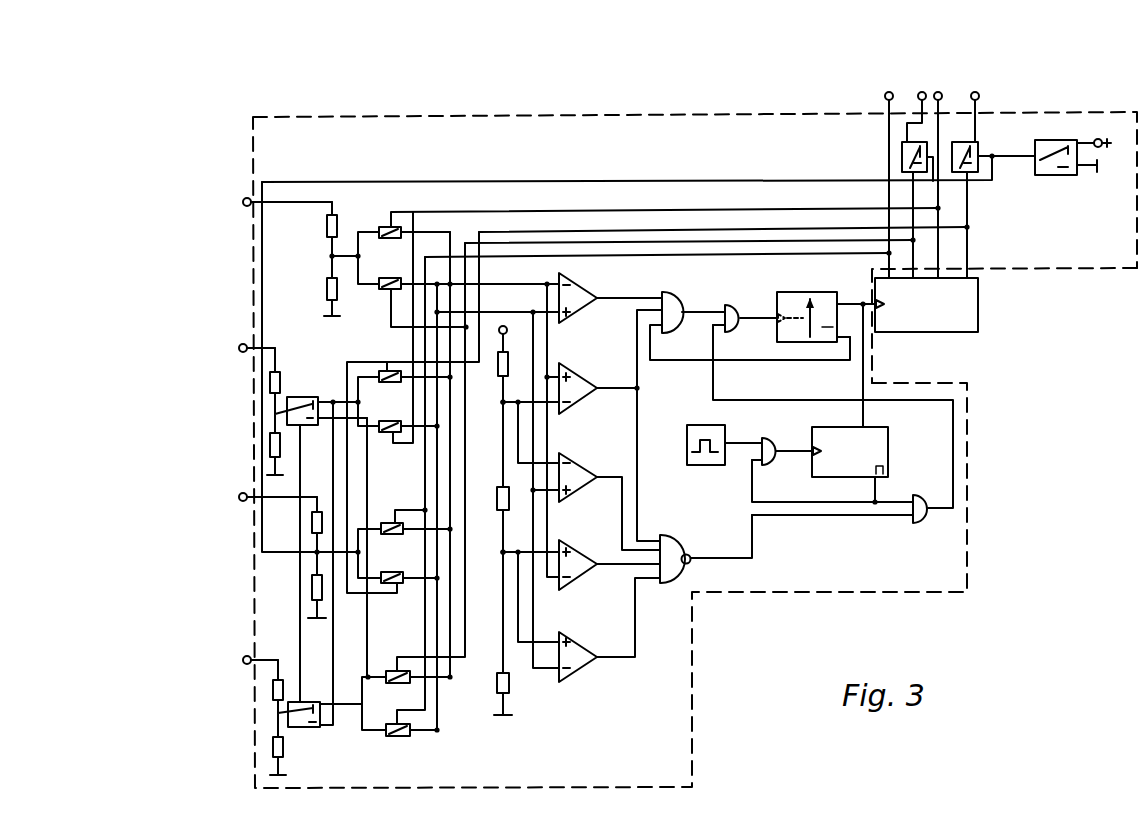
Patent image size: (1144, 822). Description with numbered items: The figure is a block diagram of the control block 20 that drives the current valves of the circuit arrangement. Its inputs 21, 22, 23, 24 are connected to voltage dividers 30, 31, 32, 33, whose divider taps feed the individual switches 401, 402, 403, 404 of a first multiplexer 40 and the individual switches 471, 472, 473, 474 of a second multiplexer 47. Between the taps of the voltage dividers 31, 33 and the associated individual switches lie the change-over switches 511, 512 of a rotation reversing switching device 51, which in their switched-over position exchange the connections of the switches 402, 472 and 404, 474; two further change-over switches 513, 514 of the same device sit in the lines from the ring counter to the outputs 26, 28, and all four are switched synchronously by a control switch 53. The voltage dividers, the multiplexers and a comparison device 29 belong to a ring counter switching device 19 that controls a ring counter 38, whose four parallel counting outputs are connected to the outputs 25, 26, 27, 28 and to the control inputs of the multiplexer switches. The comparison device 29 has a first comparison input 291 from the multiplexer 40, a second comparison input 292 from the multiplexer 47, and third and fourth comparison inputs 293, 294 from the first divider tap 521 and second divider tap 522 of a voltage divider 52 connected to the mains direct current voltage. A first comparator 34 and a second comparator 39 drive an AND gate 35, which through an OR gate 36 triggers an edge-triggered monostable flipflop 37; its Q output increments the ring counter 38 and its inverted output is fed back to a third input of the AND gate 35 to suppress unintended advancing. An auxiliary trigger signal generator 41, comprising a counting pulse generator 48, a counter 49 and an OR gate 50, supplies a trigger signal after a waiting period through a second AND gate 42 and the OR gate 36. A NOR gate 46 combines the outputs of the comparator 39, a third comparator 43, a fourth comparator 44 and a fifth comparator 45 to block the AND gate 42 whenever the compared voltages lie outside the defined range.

The ring counter switching device 19 is at (972, 384).
The control block 20 is at (206, 238).
The input 21 is at (243, 199).
The input 22 is at (240, 345).
The input 23 is at (240, 494).
The input 24 is at (243, 657).
The output 25 is at (887, 102).
The output 26 is at (920, 101).
The output 27 is at (941, 101).
The output 28 is at (980, 103).
The comparison device 29 is at (618, 486).
The first comparison input 291 is at (546, 283).
The second comparison input 292 is at (534, 310).
The third comparison input 293 is at (517, 401).
The fourth comparison input 294 is at (517, 551).
The voltage divider 30 is at (330, 256).
The voltage divider 31 is at (273, 418).
The voltage divider 32 is at (315, 555).
The voltage divider 33 is at (275, 712).
The first comparator 34 is at (575, 290).
The AND gate 35 is at (677, 295).
The OR gate 36 is at (735, 303).
The monostable flipflop 37 is at (801, 295).
The ring counter 38 is at (915, 333).
The second comparator 39 is at (580, 375).
The first multiplexer 40 is at (402, 229).
The individual switch 401 is at (382, 226).
The individual switch 402 is at (388, 371).
The individual switch 403 is at (385, 523).
The individual switch 404 is at (390, 670).
The auxiliary trigger signal generator 41 is at (866, 501).
The AND gate 42 is at (925, 522).
The third comparator 43 is at (577, 566).
The fourth comparator 44 is at (580, 483).
The fifth comparator 45 is at (578, 661).
The NOR gate 46 is at (683, 538).
The second multiplexer 47 is at (394, 268).
The individual switch 471 is at (393, 290).
The individual switch 472 is at (396, 432).
The individual switch 473 is at (398, 586).
The individual switch 474 is at (400, 737).
The counting pulse generator 48 is at (693, 425).
The counter 49 is at (880, 437).
The OR gate 50 is at (763, 441).
The rotation reversing switching device 51 is at (658, 458).
The change-over switch 511 is at (305, 397).
The change-over switch 512 is at (312, 729).
The change-over switch 513 is at (902, 158).
The change-over switch 514 is at (973, 167).
The voltage divider 52 is at (502, 516).
The first divider tap 521 is at (501, 405).
The second divider tap 522 is at (501, 555).
The control switch 53 is at (1054, 172).